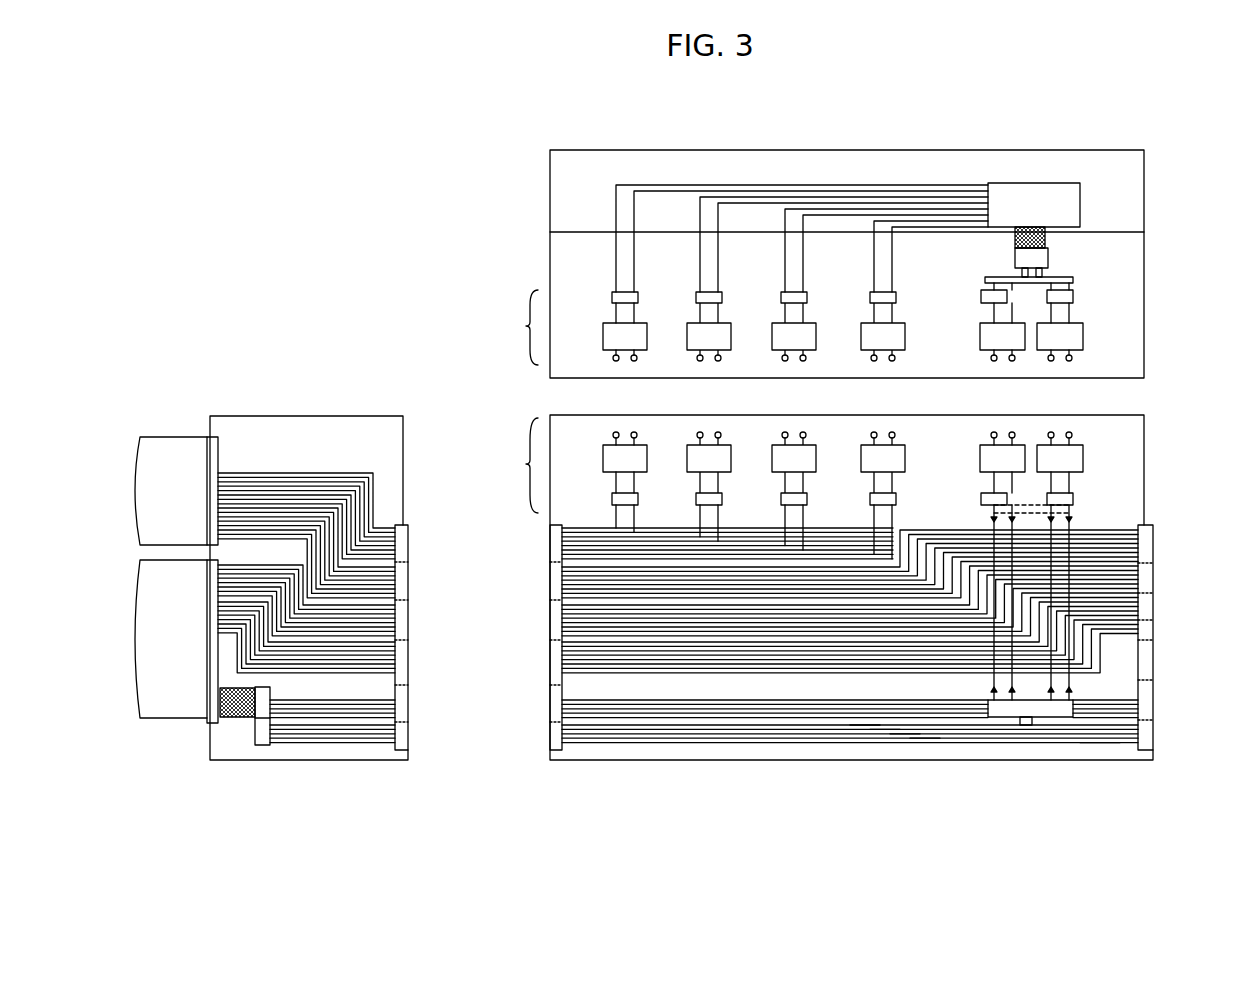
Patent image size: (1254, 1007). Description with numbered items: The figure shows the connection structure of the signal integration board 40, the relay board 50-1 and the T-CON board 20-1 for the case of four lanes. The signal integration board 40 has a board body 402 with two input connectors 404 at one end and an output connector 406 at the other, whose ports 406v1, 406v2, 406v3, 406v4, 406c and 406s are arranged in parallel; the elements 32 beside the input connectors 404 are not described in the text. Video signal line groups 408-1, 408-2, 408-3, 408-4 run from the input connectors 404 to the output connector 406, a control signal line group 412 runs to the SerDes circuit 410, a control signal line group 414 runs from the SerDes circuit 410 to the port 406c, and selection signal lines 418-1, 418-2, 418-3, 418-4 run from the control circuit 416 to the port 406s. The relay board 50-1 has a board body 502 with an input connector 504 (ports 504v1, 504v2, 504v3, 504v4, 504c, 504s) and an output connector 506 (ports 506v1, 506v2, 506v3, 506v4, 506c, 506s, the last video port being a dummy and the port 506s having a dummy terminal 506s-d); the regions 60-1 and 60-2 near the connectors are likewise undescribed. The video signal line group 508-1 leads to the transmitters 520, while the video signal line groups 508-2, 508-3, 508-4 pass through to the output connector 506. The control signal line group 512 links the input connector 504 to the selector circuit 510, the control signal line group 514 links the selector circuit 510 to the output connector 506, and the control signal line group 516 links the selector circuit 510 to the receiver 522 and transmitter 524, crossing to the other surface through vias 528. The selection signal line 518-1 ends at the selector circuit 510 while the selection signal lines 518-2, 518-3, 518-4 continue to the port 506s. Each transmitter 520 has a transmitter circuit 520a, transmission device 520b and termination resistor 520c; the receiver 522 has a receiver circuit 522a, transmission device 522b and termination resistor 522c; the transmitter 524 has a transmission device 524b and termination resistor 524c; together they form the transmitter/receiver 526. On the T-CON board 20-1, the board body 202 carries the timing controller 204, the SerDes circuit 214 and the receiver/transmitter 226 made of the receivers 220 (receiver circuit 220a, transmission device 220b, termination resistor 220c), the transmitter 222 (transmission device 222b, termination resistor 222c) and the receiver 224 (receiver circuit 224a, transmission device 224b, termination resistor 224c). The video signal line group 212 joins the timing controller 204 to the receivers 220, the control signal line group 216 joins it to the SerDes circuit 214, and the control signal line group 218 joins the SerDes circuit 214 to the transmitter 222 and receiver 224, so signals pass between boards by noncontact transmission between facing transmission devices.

The T-CON board 20-1 is at (876, 150).
The video signal line group 212 is at (948, 232).
The board body 202 is at (1144, 160).
The timing controller 204 is at (1080, 203).
The control signal line group 216 is at (1045, 240).
The SerDes circuit 214 is at (1048, 258).
The control signal line group 218 is at (1073, 280).
The receiver 220 is at (733, 331).
The receiver circuit 220a is at (612, 295).
The transmission device 220b is at (603, 335).
The termination resistor 220c is at (616, 364).
The receiver/transmitter 226 is at (509, 327).
The transmitter 222 is at (997, 344).
The transmission device 222b is at (980, 330).
The termination resistor 222c is at (1012, 362).
The receiver 224 is at (1119, 349).
The receiver circuit 224a is at (1073, 300).
The transmission device 224b is at (1083, 330).
The termination resistor 224c is at (1051, 362).
The relay board 50-1 is at (876, 611).
The board body 502 is at (1144, 430).
The transmitter/receiver 526 is at (509, 465).
The transmitter 520 is at (726, 471).
The transmitter circuit 520a is at (638, 500).
The transmission device 520b is at (603, 460).
The termination resistor 520c is at (616, 430).
The receiver 522 is at (967, 542).
The receiver circuit 522a is at (993, 500).
The transmission device 522b is at (980, 460).
The termination resistor 522c is at (1012, 430).
The transmitter 524 is at (1069, 542).
The transmission device 524b is at (1083, 460).
The termination resistor 524c is at (1051, 433).
The control signal line group 516 is at (1070, 505).
The vias 528 is at (991, 520).
The selector circuit 510 is at (1024, 725).
The control signal line group 514 is at (1090, 744).
The input connector 504 is at (552, 752).
The output connector 506 is at (1145, 752).
The first cable 60-1 is at (478, 665).
The second cable 60-2 is at (1189, 666).
The video signal line group 508-1 is at (834, 527).
The video signal line group 508-2 is at (852, 666).
The video signal line group 508-3 is at (852, 696).
The video signal line group 508-4 is at (852, 702).
The input port 504v1 is at (550, 545).
The input port 504v2 is at (550, 575).
The input port 504v3 is at (550, 630).
The input port 504v4 is at (550, 660).
The control input terminal 504c is at (550, 708).
The input port 504s is at (550, 735).
The output port 506v1 is at (852, 543).
The output port 506v2 is at (852, 564).
The output port 506v3 is at (852, 603).
The output port 506v4 is at (852, 637).
The control output terminal 506c is at (852, 706).
The output port 506s is at (852, 735).
The dummy terminal 506s-d is at (852, 783).
The control signal line group 512 is at (852, 758).
The selection signal line 518-1 is at (862, 742).
The selection signal line 518-2 is at (885, 740).
The selection signal line 518-3 is at (905, 738).
The selection signal line 518-4 is at (925, 735).
The signal integration board 40 is at (309, 548).
The board body 402 is at (403, 416).
The display panel pad portion 32 is at (201, 437).
The input connector 404 is at (213, 437).
The output connector 406 is at (405, 752).
The output port 406v1 is at (348, 460).
The output port 406v2 is at (348, 479).
The output port 406v3 is at (408, 615).
The output port 406v4 is at (408, 657).
The output port 406c is at (357, 781).
The output port 406s is at (339, 795).
The video signal line group 408-1 is at (295, 545).
The video signal line group 408-2 is at (258, 550).
The video signal line group 408-3 is at (345, 784).
The video signal line group 408-4 is at (327, 795).
The SerDes circuit 410 is at (220, 695).
The control signal line group 412 is at (262, 745).
The control signal line group 414 is at (360, 745).
The control circuit 416 is at (285, 742).
The selection signal line 418-1 is at (288, 718).
The selection signal line 418-2 is at (306, 718).
The selection signal line 418-3 is at (322, 718).
The selection signal line 418-4 is at (338, 718).